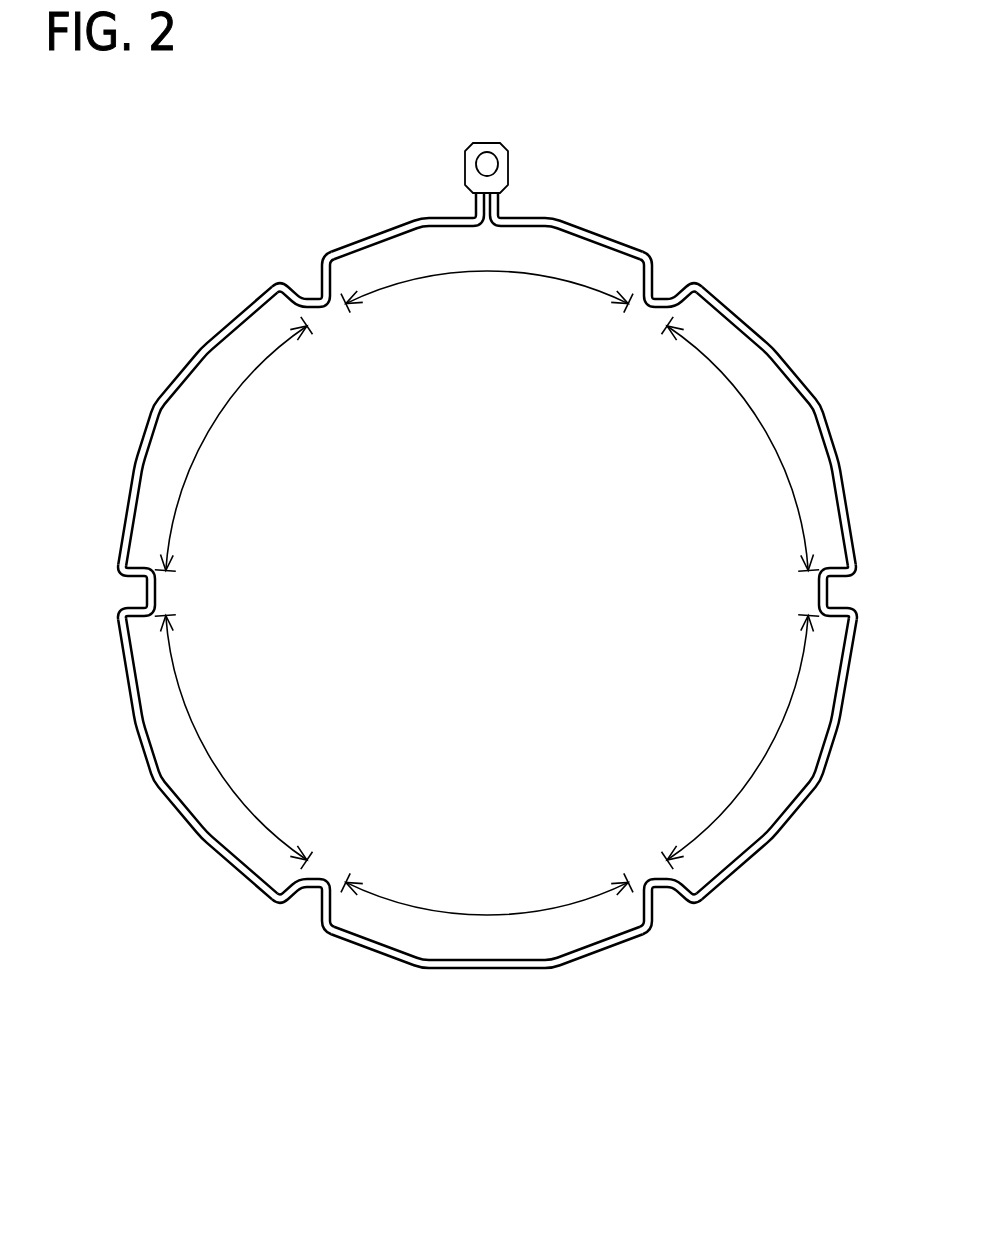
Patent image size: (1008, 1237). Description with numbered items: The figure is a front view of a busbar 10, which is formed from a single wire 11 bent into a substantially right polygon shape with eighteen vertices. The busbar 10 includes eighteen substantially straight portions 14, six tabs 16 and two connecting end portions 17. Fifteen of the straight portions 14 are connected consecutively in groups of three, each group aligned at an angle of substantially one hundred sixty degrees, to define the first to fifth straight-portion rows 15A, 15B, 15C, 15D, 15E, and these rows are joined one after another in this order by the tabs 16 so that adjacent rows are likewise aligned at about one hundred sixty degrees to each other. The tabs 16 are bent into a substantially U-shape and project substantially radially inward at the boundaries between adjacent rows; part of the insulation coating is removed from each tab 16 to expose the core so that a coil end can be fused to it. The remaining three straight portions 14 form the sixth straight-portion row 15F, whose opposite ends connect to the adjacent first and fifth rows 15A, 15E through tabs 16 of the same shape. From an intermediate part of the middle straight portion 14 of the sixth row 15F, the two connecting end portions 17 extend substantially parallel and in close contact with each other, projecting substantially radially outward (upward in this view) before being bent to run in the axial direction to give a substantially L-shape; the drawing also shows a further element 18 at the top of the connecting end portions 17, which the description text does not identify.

The busbar 10 is at (481, 571).
The wire 11 is at (481, 571).
The straight portions 14 is at (604, 238).
The first straight-portion row 15A is at (215, 432).
The second straight-portion row 15B is at (192, 716).
The third straight-portion row 15C is at (484, 916).
The fourth straight-portion row 15D is at (770, 752).
The fifth straight-portion row 15E is at (766, 428).
The sixth straight-portion row 15F is at (487, 268).
The tabs 16 is at (311, 298).
The connecting end portions 17 is at (473, 211).
The mounting tab 18 is at (481, 143).